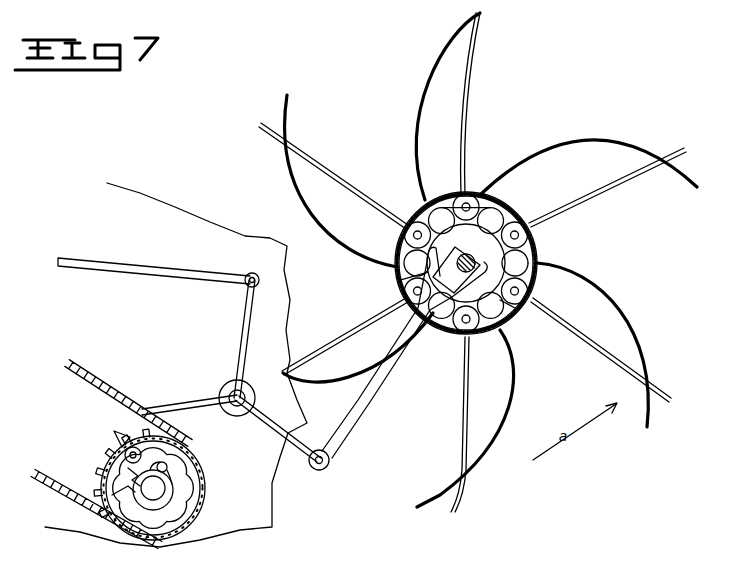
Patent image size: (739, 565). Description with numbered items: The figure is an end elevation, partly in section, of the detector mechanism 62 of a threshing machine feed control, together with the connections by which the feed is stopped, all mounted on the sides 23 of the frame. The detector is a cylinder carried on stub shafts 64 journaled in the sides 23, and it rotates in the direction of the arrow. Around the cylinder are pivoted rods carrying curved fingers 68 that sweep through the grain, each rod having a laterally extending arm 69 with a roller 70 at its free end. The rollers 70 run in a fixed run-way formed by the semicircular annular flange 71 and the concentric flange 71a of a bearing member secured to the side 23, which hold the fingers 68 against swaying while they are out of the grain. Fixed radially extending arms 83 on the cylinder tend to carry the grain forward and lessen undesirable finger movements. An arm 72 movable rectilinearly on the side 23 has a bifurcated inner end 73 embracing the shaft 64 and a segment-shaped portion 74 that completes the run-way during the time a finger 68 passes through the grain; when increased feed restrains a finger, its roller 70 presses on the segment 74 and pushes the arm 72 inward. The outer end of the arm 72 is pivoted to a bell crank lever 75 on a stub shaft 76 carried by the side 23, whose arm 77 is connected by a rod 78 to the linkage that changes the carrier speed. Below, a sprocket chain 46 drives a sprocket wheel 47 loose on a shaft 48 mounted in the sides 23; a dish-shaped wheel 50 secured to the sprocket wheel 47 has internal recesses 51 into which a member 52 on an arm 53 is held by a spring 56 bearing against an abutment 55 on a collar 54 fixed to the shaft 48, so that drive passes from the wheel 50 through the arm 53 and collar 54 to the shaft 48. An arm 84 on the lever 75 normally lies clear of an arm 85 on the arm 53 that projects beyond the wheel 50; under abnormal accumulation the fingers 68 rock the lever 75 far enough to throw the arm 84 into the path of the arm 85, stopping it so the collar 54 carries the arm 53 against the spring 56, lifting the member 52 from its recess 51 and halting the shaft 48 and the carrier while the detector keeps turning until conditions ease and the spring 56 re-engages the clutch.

The sides of the frame 23 is at (162, 212).
The sprocket chain 46 is at (105, 386).
The sprocket wheel 47 is at (100, 490).
The shaft 48 is at (158, 487).
The dish-shaped wheel 50 is at (200, 462).
The internal recesses 51 is at (100, 475).
The member 52 is at (124, 449).
The arm 53 is at (188, 445).
The collar 54 is at (163, 563).
The abutment 55 is at (130, 497).
The spring 56 is at (125, 475).
The detector mechanism 62 is at (466, 227).
The stub shafts 64 is at (471, 258).
The fingers 68 is at (417, 142).
The laterally extending arm 69 is at (427, 205).
The roller 70 is at (472, 199).
The annular flange 71 is at (528, 249).
The flange 71a is at (450, 193).
The arm 72 is at (372, 397).
The bifurcated inner end 73 is at (400, 280).
The segment-shaped portion 74 is at (512, 308).
The bell crank lever 75 is at (275, 430).
The stub shaft 76 is at (237, 406).
The arm 77 is at (240, 342).
The rod 78 is at (135, 270).
The radially extending arms 83 is at (368, 205).
The arm 84 is at (173, 403).
The arm 85 is at (122, 440).